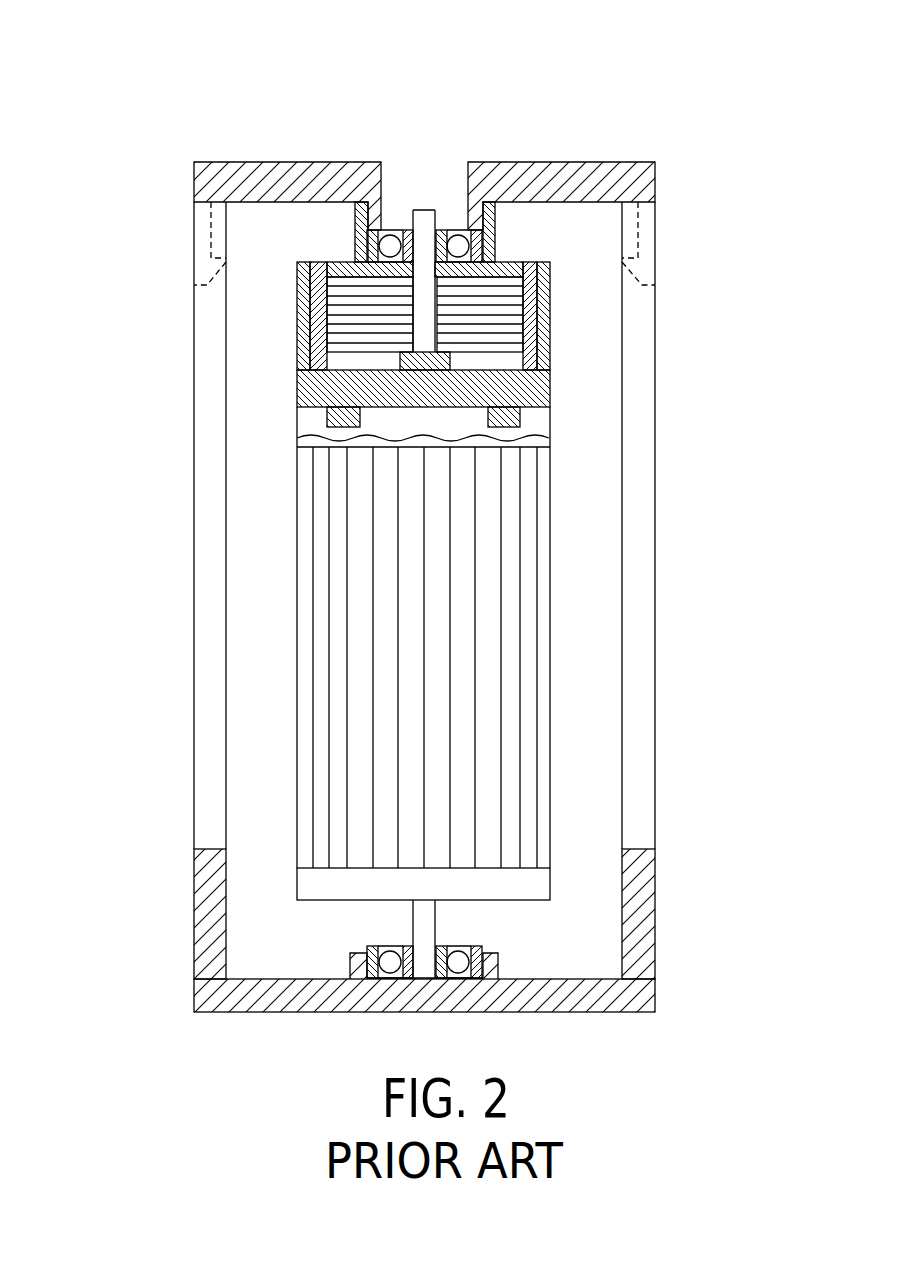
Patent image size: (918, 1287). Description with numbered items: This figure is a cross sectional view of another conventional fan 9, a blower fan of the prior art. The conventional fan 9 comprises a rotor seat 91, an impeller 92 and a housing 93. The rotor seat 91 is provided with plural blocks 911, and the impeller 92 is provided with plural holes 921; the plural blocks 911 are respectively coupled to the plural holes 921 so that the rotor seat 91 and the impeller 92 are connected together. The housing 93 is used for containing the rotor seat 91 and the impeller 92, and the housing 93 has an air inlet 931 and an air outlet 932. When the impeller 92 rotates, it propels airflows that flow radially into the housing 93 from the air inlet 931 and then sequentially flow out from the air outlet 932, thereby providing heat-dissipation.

The conventional fan 9 is at (637, 118).
The rotor seat 91 is at (561, 217).
The blocks 911 is at (520, 416).
The impeller 92 is at (603, 682).
The holes 921 is at (550, 440).
The housing 93 is at (243, 180).
The air inlet 931 is at (638, 563).
The air outlet 932 is at (210, 511).